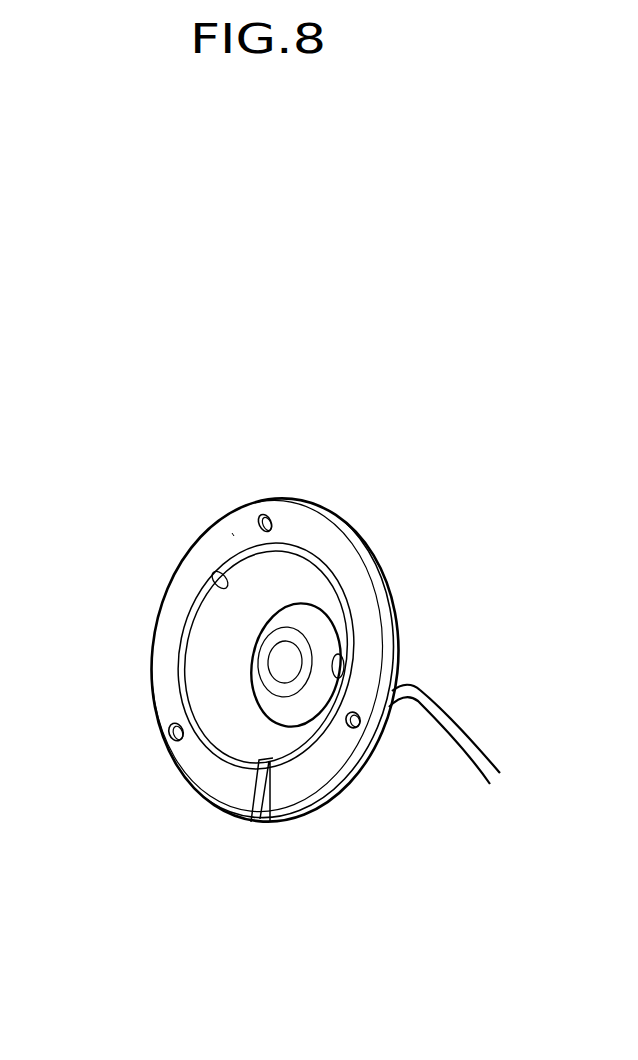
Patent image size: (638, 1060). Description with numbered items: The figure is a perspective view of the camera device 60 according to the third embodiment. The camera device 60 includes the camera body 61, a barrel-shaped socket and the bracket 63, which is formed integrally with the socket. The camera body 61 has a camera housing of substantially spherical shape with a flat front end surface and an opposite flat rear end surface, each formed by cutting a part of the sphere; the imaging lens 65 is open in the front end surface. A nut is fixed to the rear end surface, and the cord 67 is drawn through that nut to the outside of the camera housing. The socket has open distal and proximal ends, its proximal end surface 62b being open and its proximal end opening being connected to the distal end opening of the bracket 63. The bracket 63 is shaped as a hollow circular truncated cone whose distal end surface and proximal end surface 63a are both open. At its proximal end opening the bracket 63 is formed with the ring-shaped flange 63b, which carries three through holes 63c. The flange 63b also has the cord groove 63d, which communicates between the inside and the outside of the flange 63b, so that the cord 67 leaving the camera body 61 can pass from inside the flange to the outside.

The camera device 60 is at (362, 482).
The camera body 61 is at (322, 637).
The proximal end surface 62b is at (340, 647).
The bracket 63 is at (320, 598).
The proximal end surface 63a is at (224, 570).
The flange 63b is at (232, 533).
The through holes 63c is at (262, 514).
The cord groove 63d is at (250, 803).
The imaging lens 65 is at (284, 667).
The cord 67 is at (491, 766).